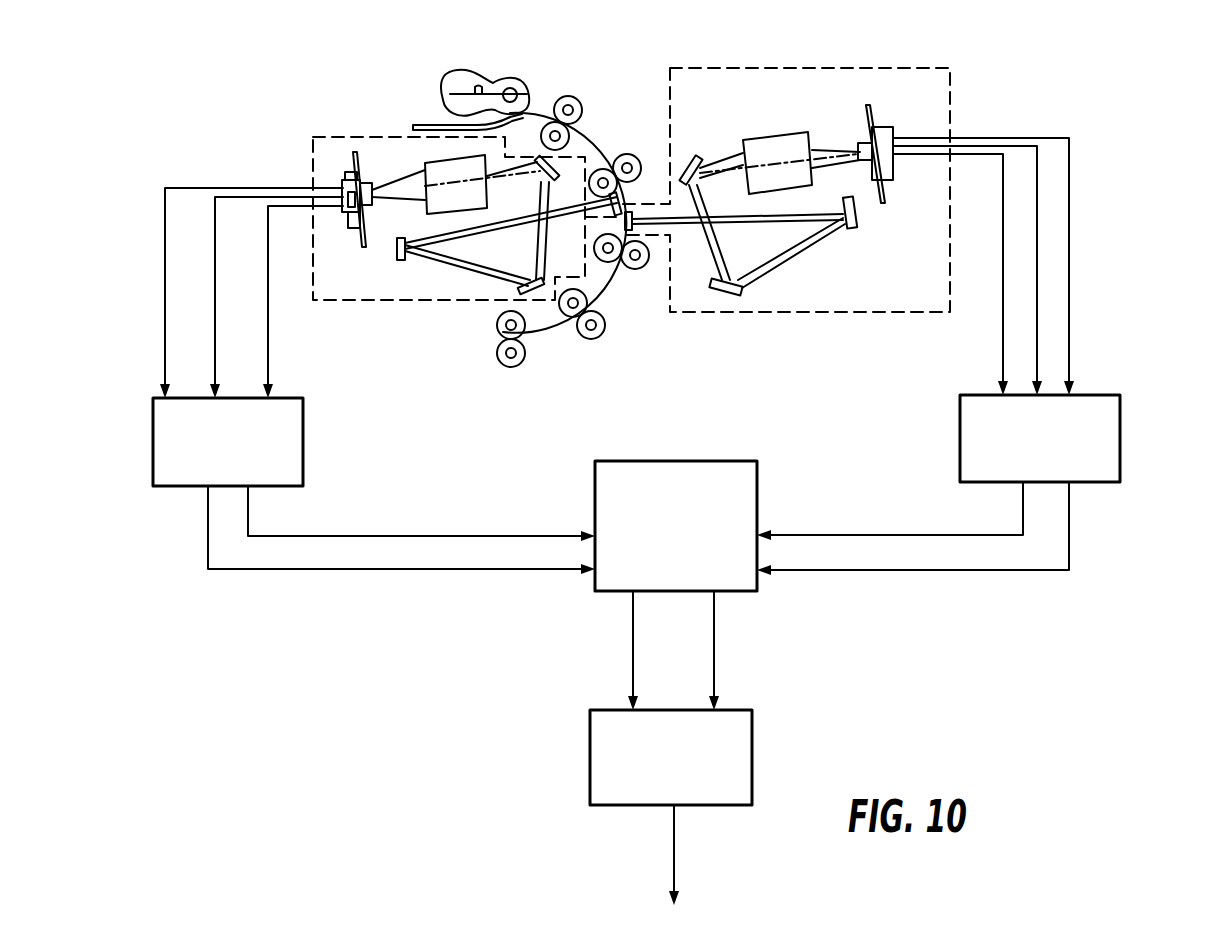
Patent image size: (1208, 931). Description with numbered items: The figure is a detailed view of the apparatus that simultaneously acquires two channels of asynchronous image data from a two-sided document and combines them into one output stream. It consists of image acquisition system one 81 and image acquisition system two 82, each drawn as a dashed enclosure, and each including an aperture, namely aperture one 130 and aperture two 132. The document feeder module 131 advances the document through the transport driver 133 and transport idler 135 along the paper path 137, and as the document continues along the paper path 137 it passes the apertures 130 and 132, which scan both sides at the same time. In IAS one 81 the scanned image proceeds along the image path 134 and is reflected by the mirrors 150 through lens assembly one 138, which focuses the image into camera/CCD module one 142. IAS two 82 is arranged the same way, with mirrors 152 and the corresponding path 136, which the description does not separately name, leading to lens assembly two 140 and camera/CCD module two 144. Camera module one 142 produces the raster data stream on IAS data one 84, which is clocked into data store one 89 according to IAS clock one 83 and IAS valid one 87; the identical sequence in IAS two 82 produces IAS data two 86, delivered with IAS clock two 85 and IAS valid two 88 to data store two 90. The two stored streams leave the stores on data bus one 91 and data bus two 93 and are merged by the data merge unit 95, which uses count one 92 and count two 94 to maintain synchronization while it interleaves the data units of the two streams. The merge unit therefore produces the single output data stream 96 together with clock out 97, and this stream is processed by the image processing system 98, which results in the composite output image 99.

The image acquisition system one 81 is at (364, 138).
The image acquisition system two 82 is at (950, 101).
The IAS clock one 83 is at (122, 356).
The IAS data one 84 is at (230, 360).
The IAS clock two 85 is at (965, 355).
The IAS data two 86 is at (1087, 354).
The IAS valid one 87 is at (305, 357).
The IAS valid two 88 is at (1069, 318).
The data store one 89 is at (303, 436).
The data store two 90 is at (1120, 426).
The data bus one 91 is at (326, 536).
The count one 92 is at (312, 569).
The data bus two 93 is at (982, 535).
The count two 94 is at (992, 570).
The data merge unit 95 is at (722, 461).
The IAS output data 96 is at (633, 625).
The clock out 97 is at (714, 642).
The image processing system 98 is at (752, 737).
The composite output image 99 is at (676, 855).
The aperture one 130 is at (600, 198).
The document feeder module 131 is at (520, 80).
The aperture two 132 is at (645, 230).
The transport driver 133 is at (580, 96).
The image path 134 is at (433, 264).
The transport idler 135 is at (578, 134).
The optical path 136 is at (817, 237).
The paper path 137 is at (596, 149).
The lens assembly one 138 is at (425, 207).
The lens assembly two 140 is at (785, 136).
The camera/CCD module one 142 is at (342, 213).
The camera/CCD module two 144 is at (897, 163).
The mirror one 150 is at (397, 252).
The mirror two 152 is at (703, 150).